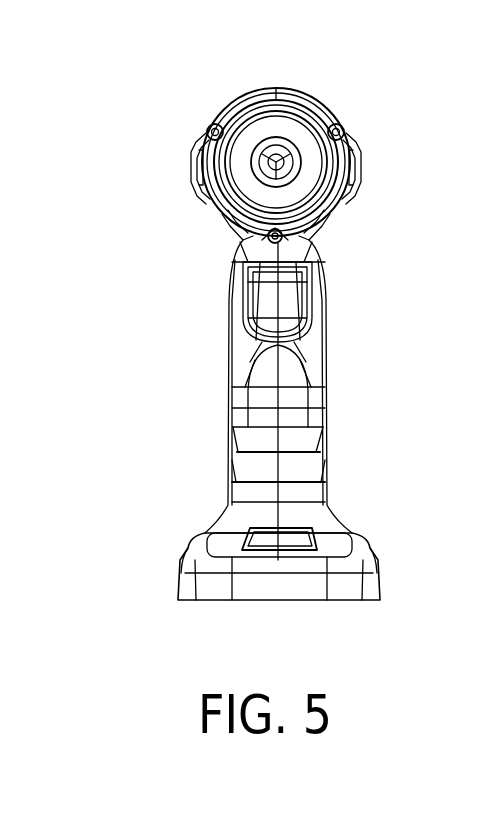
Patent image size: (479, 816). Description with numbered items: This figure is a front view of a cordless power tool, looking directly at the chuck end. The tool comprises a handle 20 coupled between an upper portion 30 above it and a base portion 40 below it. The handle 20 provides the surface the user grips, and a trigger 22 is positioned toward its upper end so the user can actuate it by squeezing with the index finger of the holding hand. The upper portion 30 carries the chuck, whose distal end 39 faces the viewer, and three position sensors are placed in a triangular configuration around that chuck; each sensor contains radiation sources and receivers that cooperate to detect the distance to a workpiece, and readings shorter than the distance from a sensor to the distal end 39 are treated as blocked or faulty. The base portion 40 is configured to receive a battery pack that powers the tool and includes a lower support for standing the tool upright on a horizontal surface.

The handle 20 is at (147, 431).
The trigger 22 is at (310, 320).
The upper portion 30 is at (142, 176).
The distal end of the chuck 39 is at (288, 160).
The base portion 40 is at (140, 557).